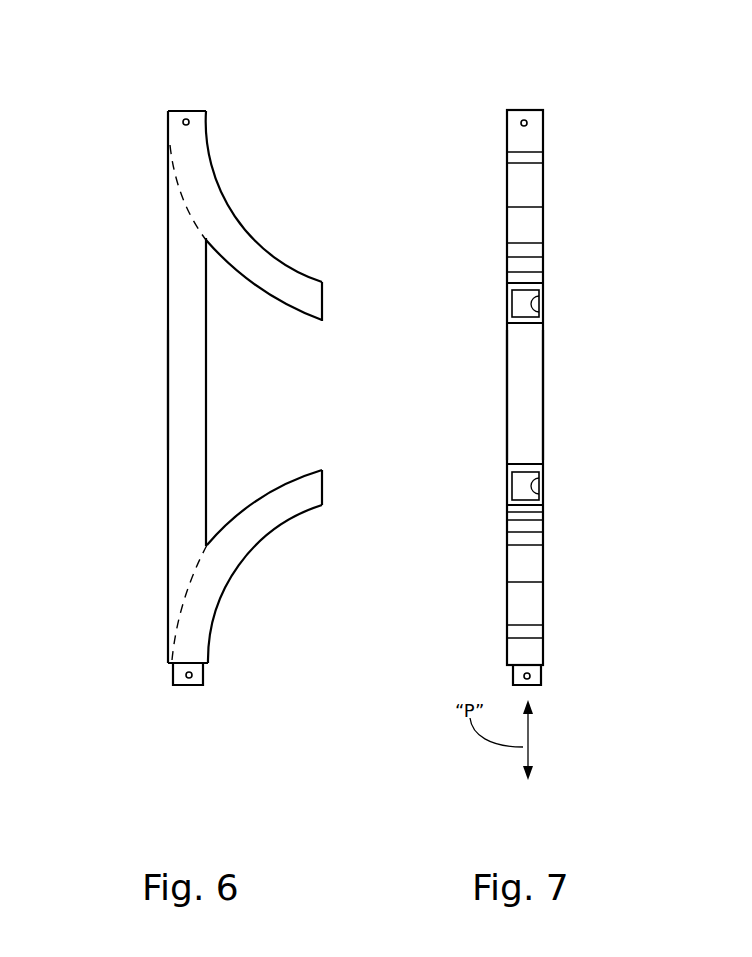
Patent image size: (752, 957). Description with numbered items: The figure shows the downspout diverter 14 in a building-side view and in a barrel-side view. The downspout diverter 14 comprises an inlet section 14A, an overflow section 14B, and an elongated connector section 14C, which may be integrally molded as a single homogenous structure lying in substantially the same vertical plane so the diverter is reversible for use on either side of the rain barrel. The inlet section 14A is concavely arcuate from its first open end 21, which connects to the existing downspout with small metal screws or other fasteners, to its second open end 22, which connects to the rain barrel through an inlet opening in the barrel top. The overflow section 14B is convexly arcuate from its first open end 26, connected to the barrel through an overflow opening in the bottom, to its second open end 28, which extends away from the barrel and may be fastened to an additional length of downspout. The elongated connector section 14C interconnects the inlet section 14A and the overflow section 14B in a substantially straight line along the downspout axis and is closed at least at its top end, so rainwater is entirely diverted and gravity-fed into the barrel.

In FIG. 6, the downspout diverter 14 is at (110, 122).
In FIG. 7, the downspout diverter 14 is at (502, 68).
In FIG. 6, the first open end 21 is at (174, 110).
In FIG. 7, the first open end 21 is at (543, 110).
In FIG. 6, the inlet section 14A is at (245, 228).
In FIG. 7, the inlet section 14A is at (543, 200).
In FIG. 6, the second open end 22 is at (322, 282).
In FIG. 7, the second open end 22 is at (537, 312).
In FIG. 6, the elongated connector section 14C is at (180, 408).
In FIG. 7, the elongated connector section 14C is at (543, 377).
In FIG. 6, the first open end 26 is at (320, 469).
In FIG. 7, the first open end 26 is at (537, 492).
In FIG. 6, the overflow section 14B is at (247, 558).
In FIG. 7, the overflow section 14B is at (543, 556).
In FIG. 6, the second open end 28 is at (205, 683).